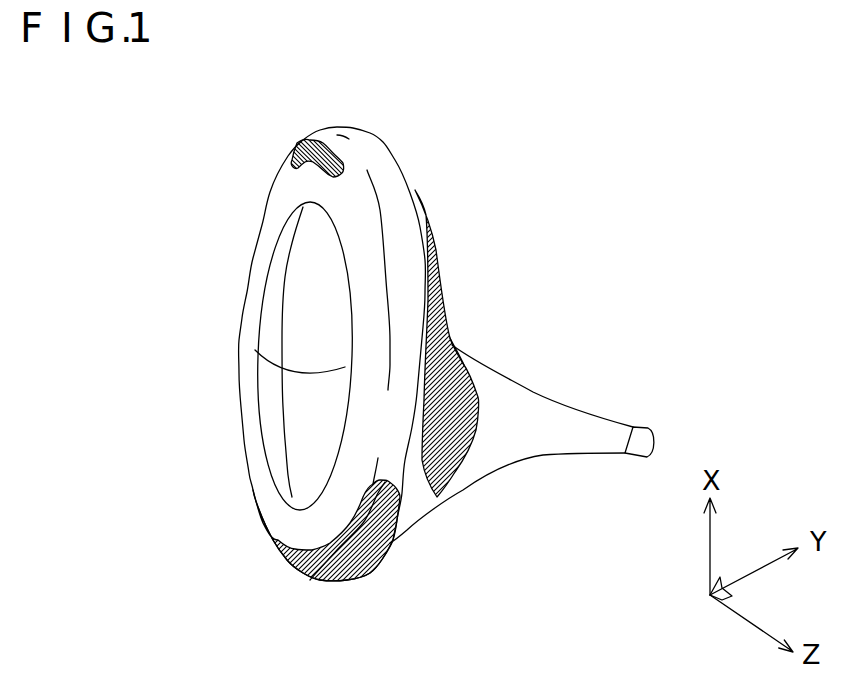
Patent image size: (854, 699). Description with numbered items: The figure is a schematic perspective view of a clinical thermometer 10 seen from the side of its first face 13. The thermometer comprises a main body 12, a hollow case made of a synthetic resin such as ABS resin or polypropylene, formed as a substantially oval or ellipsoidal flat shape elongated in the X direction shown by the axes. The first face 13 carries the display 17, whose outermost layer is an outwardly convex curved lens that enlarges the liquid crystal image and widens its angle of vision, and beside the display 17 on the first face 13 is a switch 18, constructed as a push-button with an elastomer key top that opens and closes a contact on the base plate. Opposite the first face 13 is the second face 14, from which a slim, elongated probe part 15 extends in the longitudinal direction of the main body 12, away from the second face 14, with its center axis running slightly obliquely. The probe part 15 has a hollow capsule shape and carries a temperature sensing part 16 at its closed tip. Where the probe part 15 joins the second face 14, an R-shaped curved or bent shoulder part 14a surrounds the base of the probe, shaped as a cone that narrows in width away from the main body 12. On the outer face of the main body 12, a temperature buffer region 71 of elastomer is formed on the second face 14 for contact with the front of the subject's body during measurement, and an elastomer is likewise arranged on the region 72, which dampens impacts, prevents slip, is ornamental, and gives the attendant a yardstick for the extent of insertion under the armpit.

The clinical thermometer 10 is at (548, 107).
The main body 12 is at (393, 557).
The first face 13 is at (255, 455).
The second face 14 is at (411, 188).
The shoulder part 14a is at (457, 343).
The probe part 15 is at (547, 453).
The temperature sensing part 16 is at (638, 430).
The display 17 is at (265, 318).
The switch 18 is at (298, 143).
The temperature buffer region 71 is at (438, 293).
The elastomer region 72 is at (310, 579).